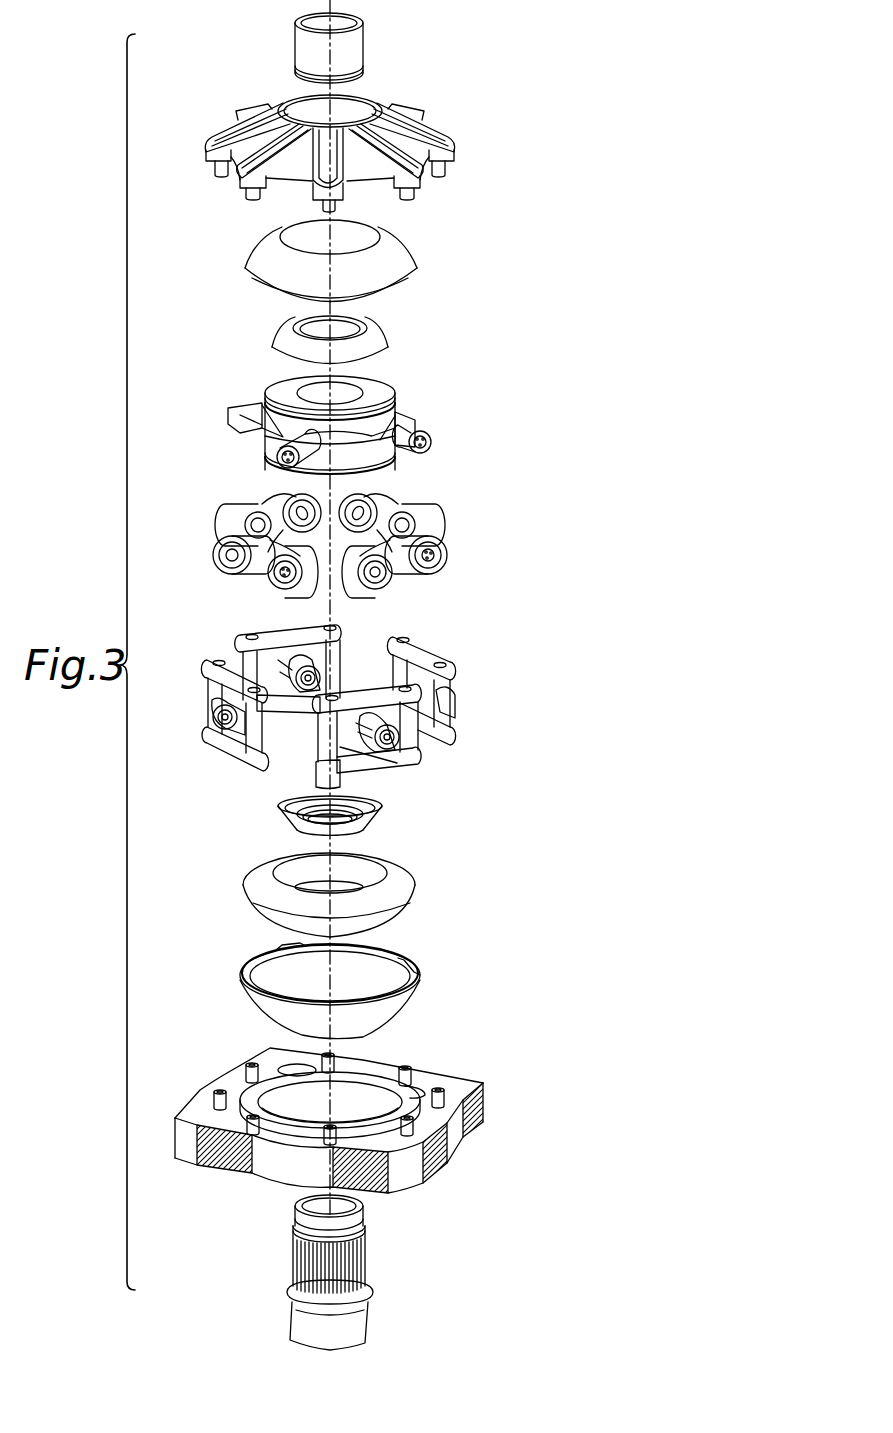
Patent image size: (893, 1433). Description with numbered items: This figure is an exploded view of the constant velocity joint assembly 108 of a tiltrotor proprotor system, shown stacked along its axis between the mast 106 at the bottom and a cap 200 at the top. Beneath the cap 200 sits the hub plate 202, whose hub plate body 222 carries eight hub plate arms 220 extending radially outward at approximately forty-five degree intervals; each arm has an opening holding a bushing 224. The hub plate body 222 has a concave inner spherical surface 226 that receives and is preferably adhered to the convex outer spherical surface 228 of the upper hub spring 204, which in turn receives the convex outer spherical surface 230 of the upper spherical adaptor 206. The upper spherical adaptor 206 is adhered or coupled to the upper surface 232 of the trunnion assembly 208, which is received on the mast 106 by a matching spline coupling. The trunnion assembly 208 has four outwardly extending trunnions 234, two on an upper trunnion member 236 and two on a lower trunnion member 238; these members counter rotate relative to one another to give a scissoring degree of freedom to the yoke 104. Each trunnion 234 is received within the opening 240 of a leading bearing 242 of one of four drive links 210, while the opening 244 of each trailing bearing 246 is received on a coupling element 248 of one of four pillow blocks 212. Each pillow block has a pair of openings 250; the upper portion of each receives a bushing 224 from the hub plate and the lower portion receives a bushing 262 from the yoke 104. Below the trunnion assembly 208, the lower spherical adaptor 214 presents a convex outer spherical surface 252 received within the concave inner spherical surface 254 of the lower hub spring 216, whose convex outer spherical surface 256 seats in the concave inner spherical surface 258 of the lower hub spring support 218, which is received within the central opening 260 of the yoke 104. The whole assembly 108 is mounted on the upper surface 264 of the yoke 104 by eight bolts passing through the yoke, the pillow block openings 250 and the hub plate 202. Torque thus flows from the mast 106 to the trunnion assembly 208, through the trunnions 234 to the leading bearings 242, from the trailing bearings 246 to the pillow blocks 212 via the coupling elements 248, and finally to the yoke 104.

The yoke 104 is at (354, 1120).
The mast 106 is at (363, 1260).
The constant velocity joint assembly 108 is at (486, 124).
The cap 200 is at (358, 45).
The hub plate 202 is at (362, 140).
The upper hub spring 204 is at (331, 261).
The upper spherical adaptor 206 is at (330, 340).
The trunnion assembly 208 is at (327, 422).
The drive links 210 is at (367, 548).
The pillow blocks 212 is at (330, 711).
The lower spherical adaptor 214 is at (331, 823).
The lower hub spring 216 is at (324, 892).
The lower hub spring support 218 is at (360, 987).
The hub plate arms 220 is at (440, 154).
The hub plate body 222 is at (298, 168).
The bushing 224 is at (448, 170).
The concave inner spherical surface 226 is at (297, 110).
The convex outer spherical surface 228 is at (253, 257).
The convex outer spherical surface 230 is at (283, 334).
The upper surface 232 is at (287, 385).
The trunnions 234 is at (410, 448).
The upper trunnion member 236 is at (280, 430).
The lower trunnion member 238 is at (270, 456).
The opening 240 is at (355, 508).
The leading bearing 242 is at (442, 553).
The opening 244 is at (388, 580).
The trailing bearing 246 is at (372, 589).
The coupling element 248 is at (362, 747).
The openings 250 is at (208, 662).
The convex outer spherical surface 252 is at (297, 830).
The concave inner spherical surface 254 is at (370, 870).
The convex outer spherical surface 256 is at (385, 913).
The concave inner spherical surface 258 is at (385, 967).
The central opening 260 is at (235, 1078).
The bushing 262 is at (479, 1096).
The upper surface 264 is at (465, 1076).